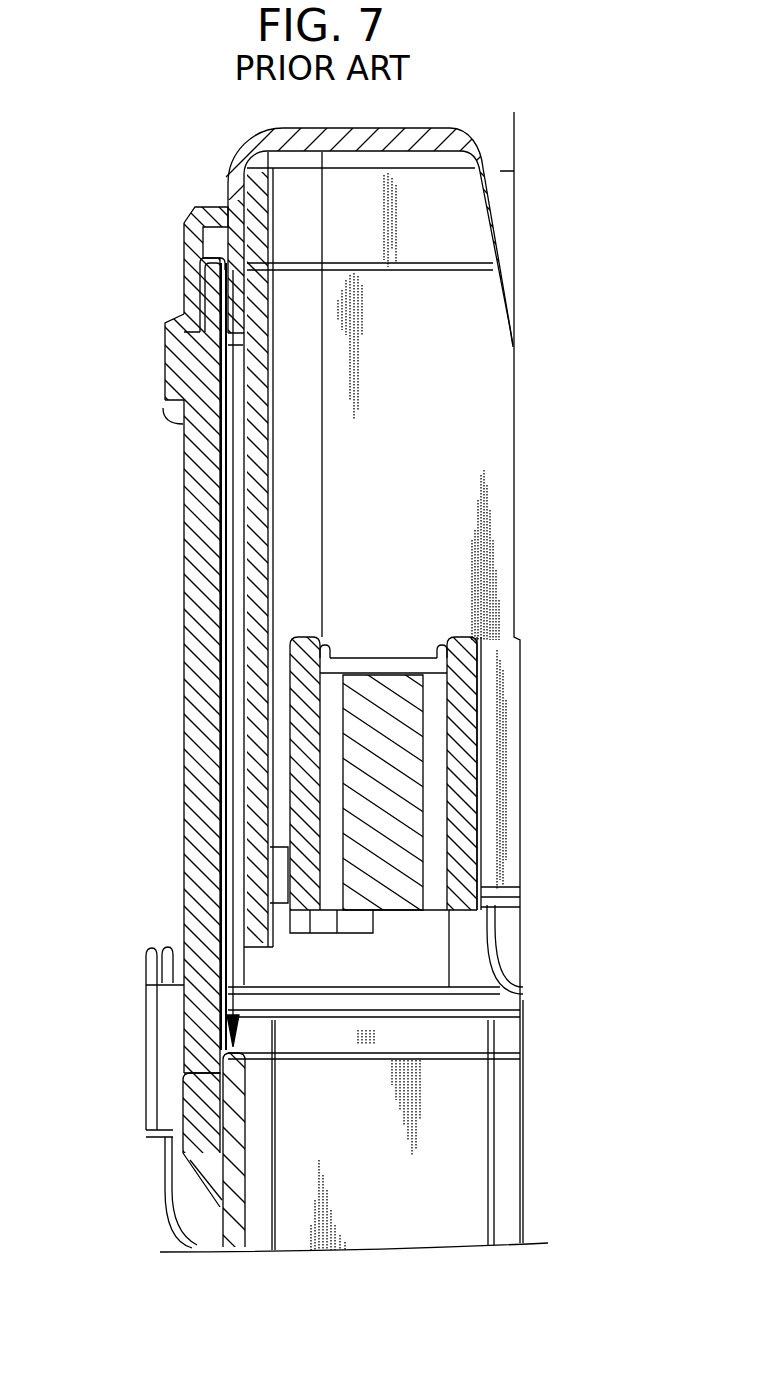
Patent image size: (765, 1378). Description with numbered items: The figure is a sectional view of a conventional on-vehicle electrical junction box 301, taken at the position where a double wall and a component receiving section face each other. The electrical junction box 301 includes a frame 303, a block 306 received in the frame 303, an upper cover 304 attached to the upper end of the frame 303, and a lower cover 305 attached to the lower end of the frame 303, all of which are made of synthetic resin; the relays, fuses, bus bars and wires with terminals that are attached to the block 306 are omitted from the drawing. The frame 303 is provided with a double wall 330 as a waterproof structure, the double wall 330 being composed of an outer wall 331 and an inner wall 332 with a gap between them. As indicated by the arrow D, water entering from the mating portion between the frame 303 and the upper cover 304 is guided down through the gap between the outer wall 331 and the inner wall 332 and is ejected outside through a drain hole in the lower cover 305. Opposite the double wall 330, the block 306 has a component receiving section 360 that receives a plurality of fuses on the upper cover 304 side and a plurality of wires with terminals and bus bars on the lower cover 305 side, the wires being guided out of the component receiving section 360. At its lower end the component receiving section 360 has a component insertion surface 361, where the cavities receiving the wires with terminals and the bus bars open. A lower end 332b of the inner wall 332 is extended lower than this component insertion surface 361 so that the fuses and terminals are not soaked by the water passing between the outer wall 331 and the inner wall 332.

The electrical junction box 301 is at (625, 138).
The frame 303 is at (184, 598).
The upper cover 304 is at (165, 355).
The lower cover 305 is at (214, 1218).
The block 306 is at (488, 917).
The double wall 330 is at (103, 446).
The outer wall 331 is at (195, 452).
The inner wall 332 is at (262, 488).
The lower end of the inner wall 332b is at (222, 990).
The component receiving section 360 is at (383, 747).
The component insertion surface 361 is at (406, 913).
The arrow D is at (230, 748).